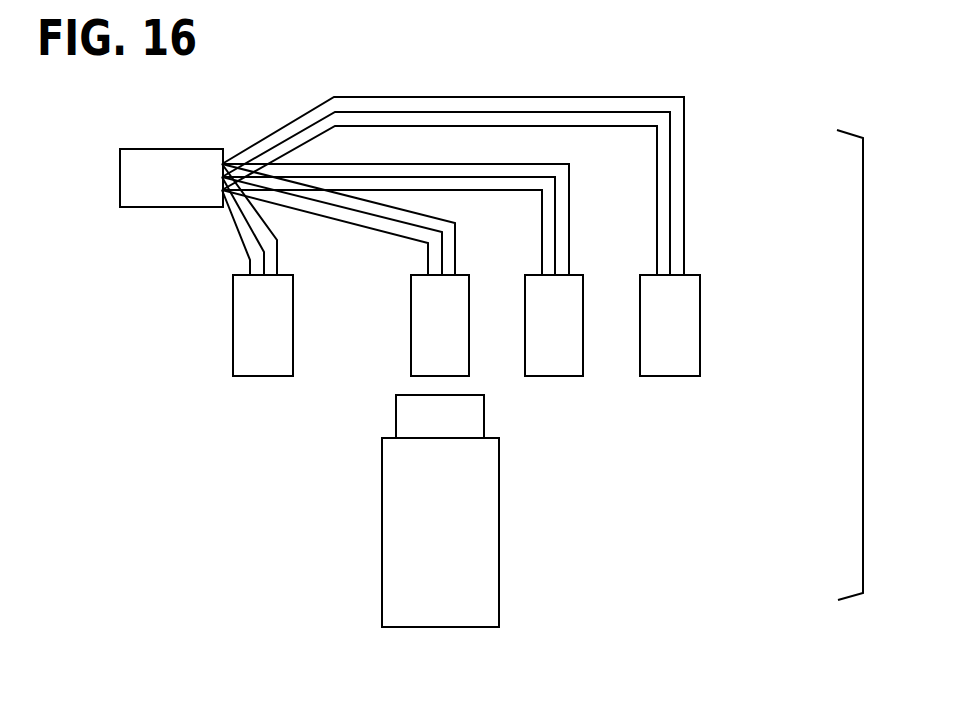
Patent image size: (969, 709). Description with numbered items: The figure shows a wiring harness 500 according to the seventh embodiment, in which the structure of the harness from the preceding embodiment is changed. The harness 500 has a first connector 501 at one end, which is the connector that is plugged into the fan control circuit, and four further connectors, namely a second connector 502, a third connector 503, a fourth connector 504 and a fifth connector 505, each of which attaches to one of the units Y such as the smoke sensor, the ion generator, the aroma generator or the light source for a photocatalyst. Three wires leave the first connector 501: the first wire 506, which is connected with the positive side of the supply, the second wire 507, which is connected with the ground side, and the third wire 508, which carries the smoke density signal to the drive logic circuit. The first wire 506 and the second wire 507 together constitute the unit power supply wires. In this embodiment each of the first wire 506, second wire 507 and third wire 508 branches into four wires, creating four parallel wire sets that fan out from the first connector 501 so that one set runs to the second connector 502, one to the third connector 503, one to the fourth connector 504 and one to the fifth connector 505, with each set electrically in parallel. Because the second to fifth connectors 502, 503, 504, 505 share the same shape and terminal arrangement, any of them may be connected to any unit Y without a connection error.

The wiring harness 500 is at (506, 161).
The first connector 501 is at (178, 148).
The second connector 502 is at (676, 370).
The third connector 503 is at (562, 370).
The fourth connector 504 is at (427, 302).
The fifth connector 505 is at (248, 302).
The first wire 506 is at (421, 97).
The second wire 507 is at (512, 112).
The third wire 508 is at (607, 127).
The unit Y is at (446, 613).